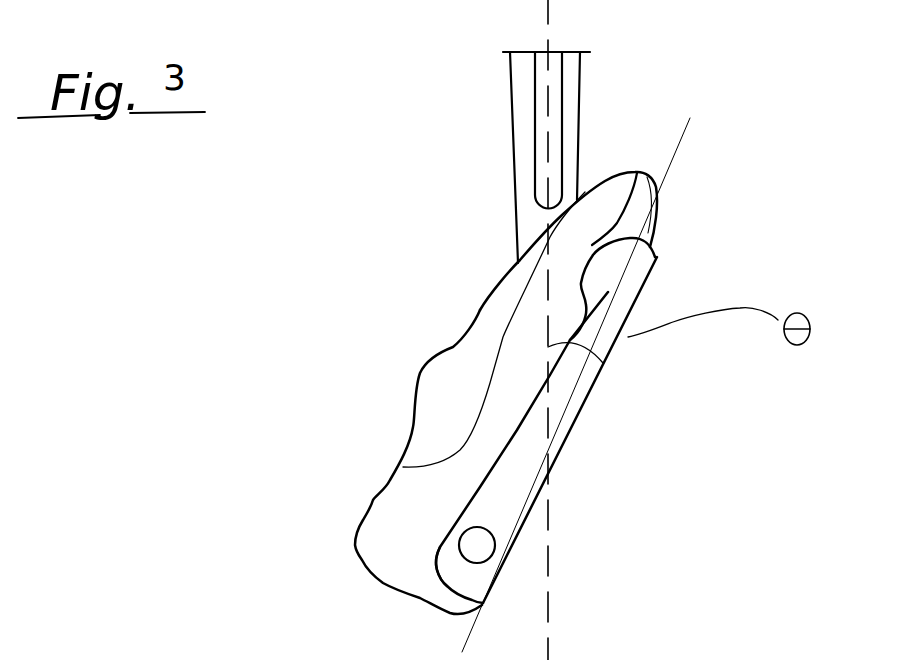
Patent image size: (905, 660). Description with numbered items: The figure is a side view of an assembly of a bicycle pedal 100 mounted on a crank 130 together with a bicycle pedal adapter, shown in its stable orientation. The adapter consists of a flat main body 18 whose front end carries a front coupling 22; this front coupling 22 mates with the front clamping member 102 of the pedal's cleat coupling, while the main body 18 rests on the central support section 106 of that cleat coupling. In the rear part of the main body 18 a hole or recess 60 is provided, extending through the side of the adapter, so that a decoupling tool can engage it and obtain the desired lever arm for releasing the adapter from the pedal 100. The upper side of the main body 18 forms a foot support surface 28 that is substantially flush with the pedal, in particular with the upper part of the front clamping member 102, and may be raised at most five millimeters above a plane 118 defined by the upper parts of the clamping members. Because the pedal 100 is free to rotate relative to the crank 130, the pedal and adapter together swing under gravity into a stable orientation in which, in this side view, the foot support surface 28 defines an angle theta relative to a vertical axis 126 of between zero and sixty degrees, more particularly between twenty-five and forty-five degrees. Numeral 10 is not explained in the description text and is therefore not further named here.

The arm 10 is at (552, 468).
The main body 18 is at (527, 501).
The front coupling 22 is at (618, 283).
The foot support surface 28 is at (581, 406).
The hole or recess 60 is at (470, 548).
The bicycle pedal 100 is at (445, 407).
The front clamping member 102 is at (645, 200).
The central support section 106 is at (520, 417).
The plane 118 is at (604, 334).
The vertical axis 126 is at (557, 522).
The crank 130 is at (572, 108).